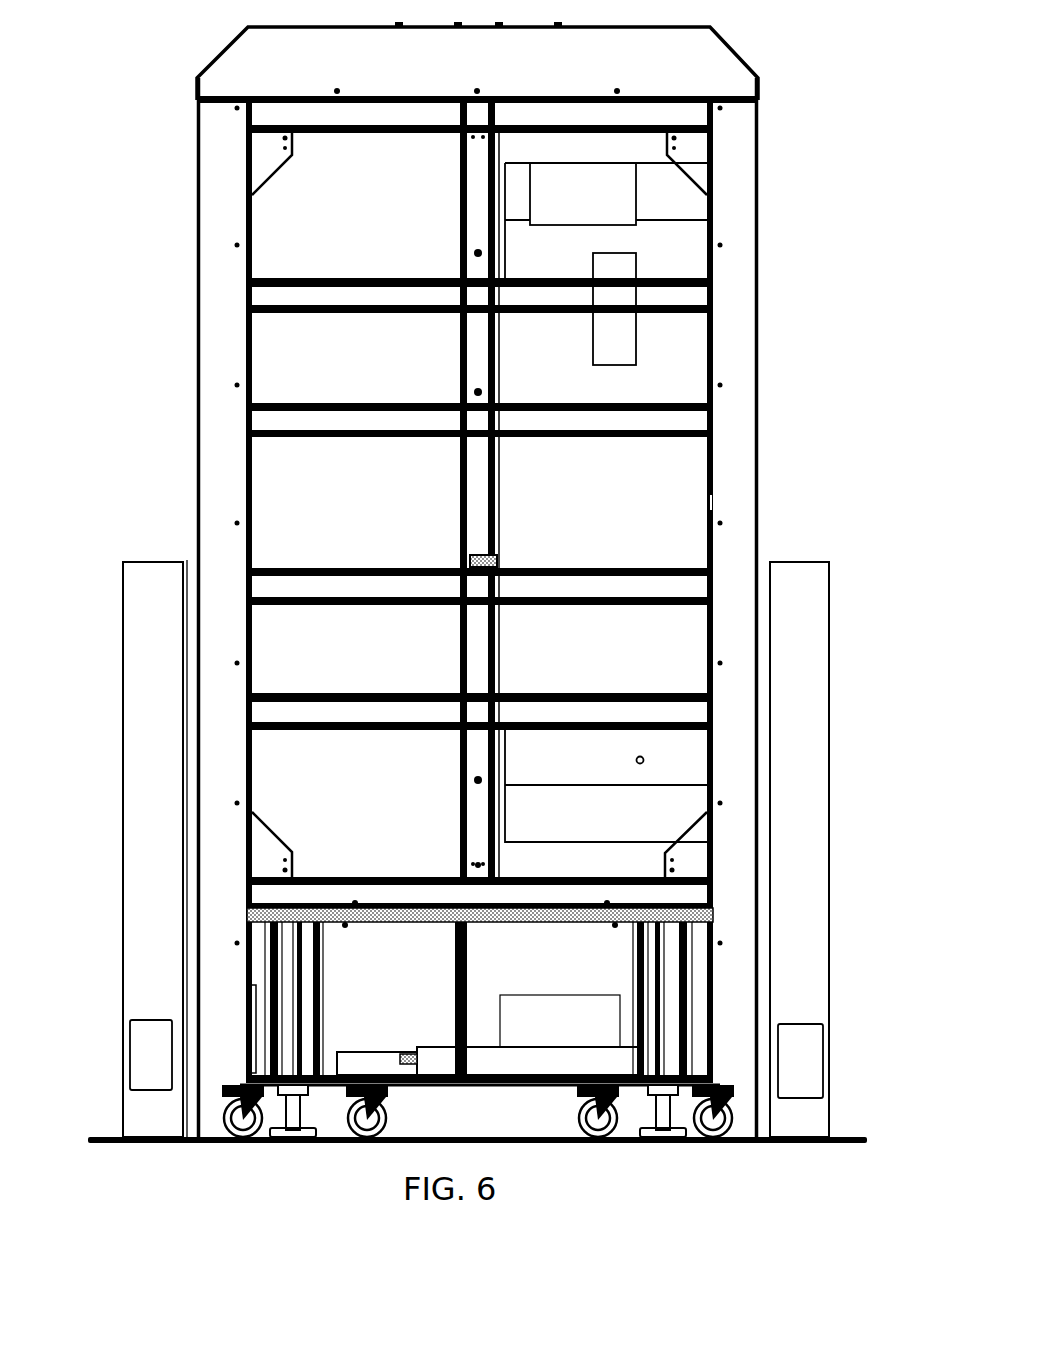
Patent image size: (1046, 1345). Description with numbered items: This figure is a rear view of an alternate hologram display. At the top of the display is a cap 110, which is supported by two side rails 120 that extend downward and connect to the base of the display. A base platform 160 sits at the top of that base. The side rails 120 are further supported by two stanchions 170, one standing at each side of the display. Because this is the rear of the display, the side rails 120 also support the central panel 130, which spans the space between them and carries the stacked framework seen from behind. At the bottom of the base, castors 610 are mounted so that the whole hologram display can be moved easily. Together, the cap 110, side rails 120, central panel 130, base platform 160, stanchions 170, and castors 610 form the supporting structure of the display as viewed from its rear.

The cap 110 is at (745, 58).
The side rail 120 is at (197, 201).
The central panel 130 is at (668, 420).
The base platform 160 is at (630, 912).
The stanchion 170 is at (122, 682).
The castor 610 is at (753, 1102).